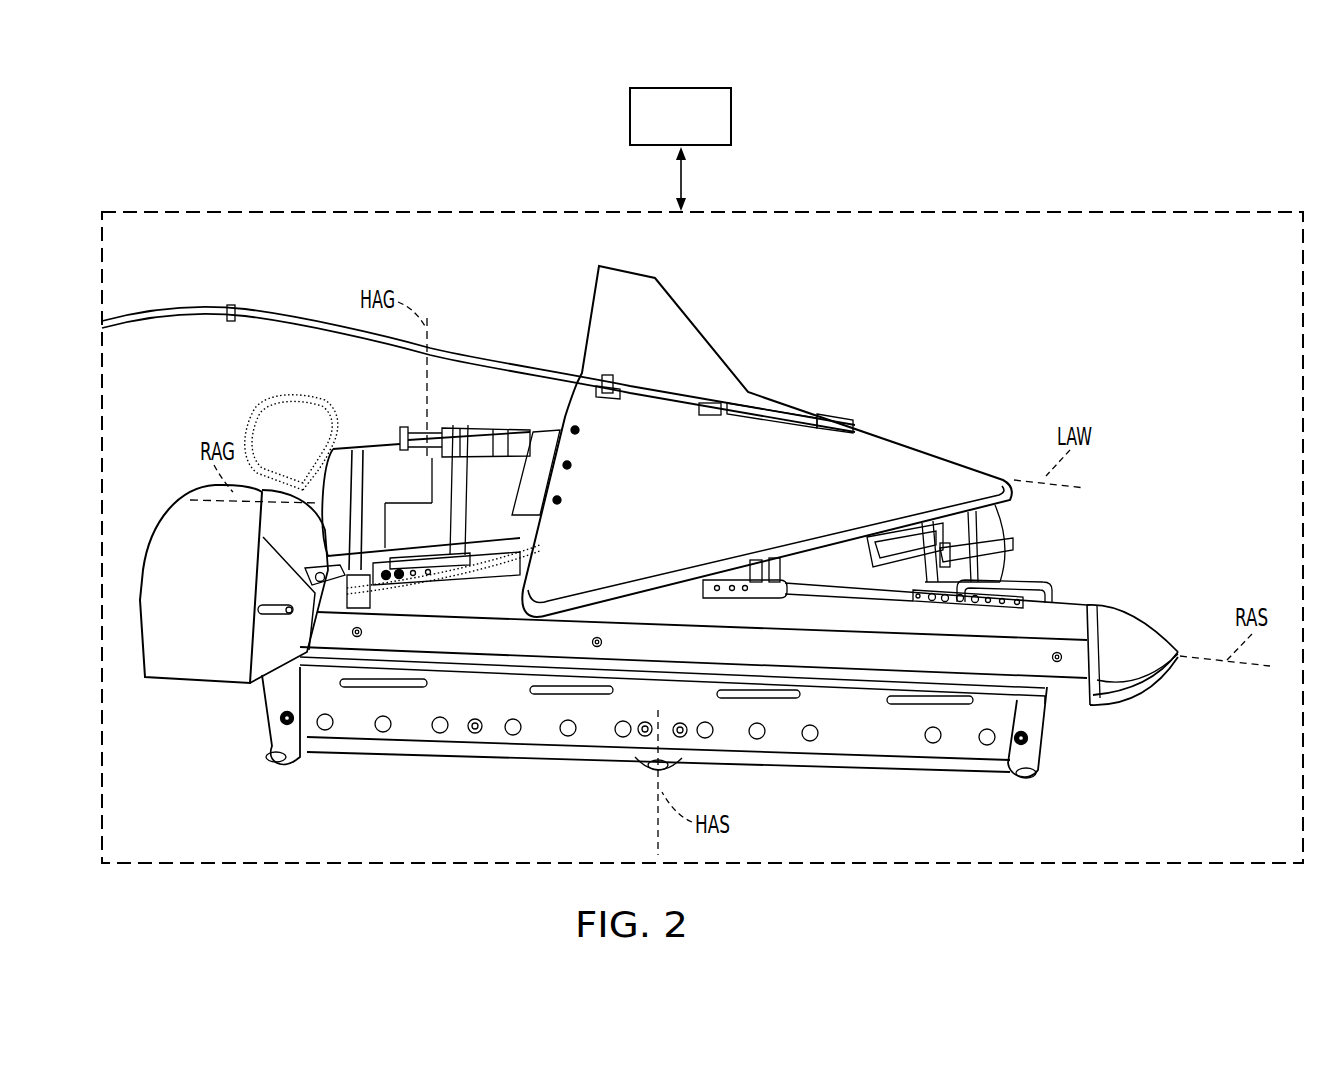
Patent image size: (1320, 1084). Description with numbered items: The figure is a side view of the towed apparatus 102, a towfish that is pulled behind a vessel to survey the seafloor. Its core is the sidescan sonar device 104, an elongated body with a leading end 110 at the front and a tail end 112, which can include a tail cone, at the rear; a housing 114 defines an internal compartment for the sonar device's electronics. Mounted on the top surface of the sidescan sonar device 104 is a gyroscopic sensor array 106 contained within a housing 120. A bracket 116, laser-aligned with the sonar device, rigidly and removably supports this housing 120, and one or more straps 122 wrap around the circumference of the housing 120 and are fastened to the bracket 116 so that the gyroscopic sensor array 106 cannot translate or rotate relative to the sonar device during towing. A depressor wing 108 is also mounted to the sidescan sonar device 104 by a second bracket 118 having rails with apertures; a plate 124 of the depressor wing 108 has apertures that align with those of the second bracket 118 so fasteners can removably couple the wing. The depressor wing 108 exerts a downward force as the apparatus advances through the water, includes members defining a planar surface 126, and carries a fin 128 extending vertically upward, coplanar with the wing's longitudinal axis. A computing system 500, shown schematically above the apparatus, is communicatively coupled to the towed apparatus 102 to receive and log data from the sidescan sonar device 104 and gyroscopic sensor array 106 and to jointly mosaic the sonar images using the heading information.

The towed apparatus 102 is at (207, 130).
The computing system 500 is at (694, 128).
The sidescan sonar device 104 is at (1072, 594).
The gyroscopic sensor array 106 is at (345, 436).
The depressor wing 108 is at (778, 398).
The leading end 110 is at (1186, 622).
The tail end 112 is at (153, 528).
The housing 114 is at (686, 636).
The bracket 116 is at (409, 585).
The second bracket 118 is at (756, 604).
The housing 120 is at (310, 455).
The straps 122 is at (367, 436).
The plate 124 is at (800, 562).
The planar surface 126 is at (780, 462).
The fin 128 is at (697, 312).